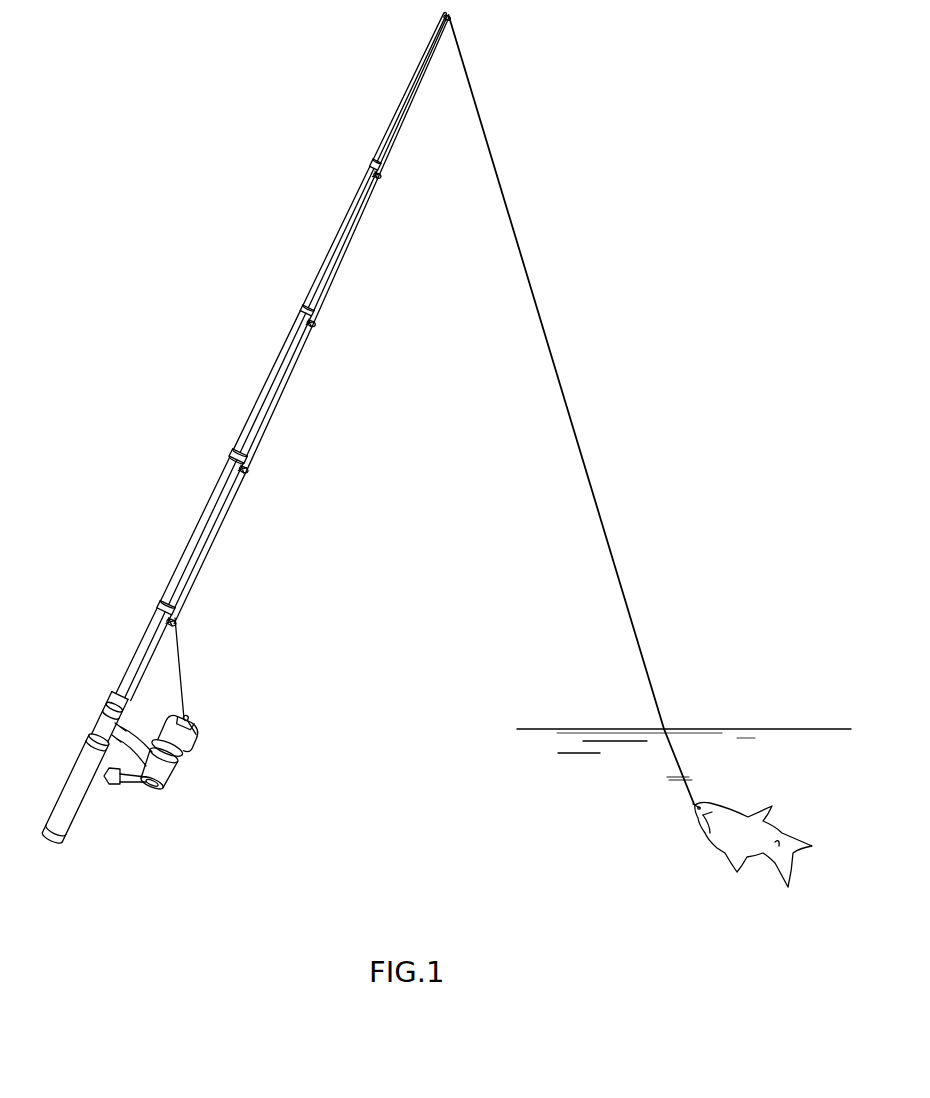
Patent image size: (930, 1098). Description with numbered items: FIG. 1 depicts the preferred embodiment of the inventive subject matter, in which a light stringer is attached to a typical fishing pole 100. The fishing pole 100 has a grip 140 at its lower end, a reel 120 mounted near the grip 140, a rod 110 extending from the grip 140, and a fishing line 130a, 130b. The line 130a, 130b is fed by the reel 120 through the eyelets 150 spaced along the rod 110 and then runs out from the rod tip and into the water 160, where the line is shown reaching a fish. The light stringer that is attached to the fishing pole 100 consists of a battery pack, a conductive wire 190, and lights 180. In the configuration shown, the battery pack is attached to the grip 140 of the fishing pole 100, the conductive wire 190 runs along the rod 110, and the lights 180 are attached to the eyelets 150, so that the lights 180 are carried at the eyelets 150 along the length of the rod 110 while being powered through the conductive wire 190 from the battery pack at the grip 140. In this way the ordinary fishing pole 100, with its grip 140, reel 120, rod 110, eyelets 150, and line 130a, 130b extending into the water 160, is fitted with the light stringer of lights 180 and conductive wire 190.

The fishing pole 100 is at (151, 272).
The rod 110 is at (411, 79).
The reel 120 is at (196, 752).
The line 130a is at (184, 679).
The line 130b is at (567, 403).
The grip 140 is at (76, 830).
The eyelets 150 is at (319, 320).
The water 160 is at (690, 821).
The lights 180 is at (250, 469).
The conductive wire 190 is at (281, 401).